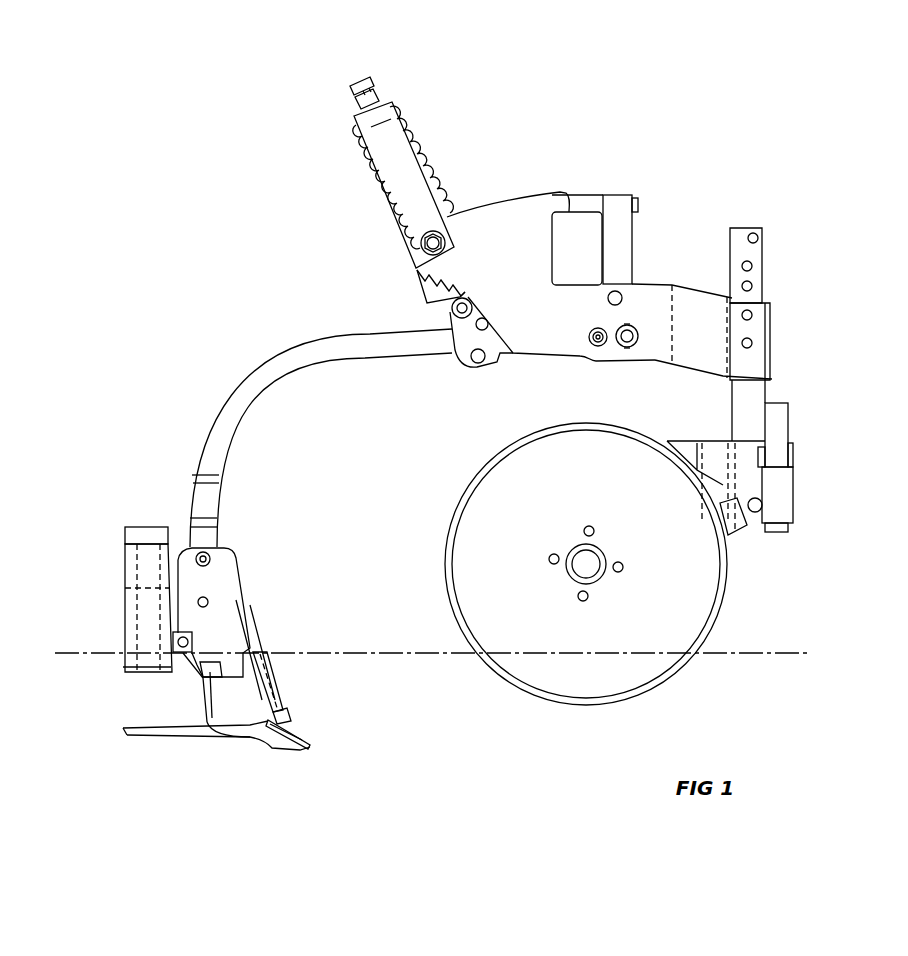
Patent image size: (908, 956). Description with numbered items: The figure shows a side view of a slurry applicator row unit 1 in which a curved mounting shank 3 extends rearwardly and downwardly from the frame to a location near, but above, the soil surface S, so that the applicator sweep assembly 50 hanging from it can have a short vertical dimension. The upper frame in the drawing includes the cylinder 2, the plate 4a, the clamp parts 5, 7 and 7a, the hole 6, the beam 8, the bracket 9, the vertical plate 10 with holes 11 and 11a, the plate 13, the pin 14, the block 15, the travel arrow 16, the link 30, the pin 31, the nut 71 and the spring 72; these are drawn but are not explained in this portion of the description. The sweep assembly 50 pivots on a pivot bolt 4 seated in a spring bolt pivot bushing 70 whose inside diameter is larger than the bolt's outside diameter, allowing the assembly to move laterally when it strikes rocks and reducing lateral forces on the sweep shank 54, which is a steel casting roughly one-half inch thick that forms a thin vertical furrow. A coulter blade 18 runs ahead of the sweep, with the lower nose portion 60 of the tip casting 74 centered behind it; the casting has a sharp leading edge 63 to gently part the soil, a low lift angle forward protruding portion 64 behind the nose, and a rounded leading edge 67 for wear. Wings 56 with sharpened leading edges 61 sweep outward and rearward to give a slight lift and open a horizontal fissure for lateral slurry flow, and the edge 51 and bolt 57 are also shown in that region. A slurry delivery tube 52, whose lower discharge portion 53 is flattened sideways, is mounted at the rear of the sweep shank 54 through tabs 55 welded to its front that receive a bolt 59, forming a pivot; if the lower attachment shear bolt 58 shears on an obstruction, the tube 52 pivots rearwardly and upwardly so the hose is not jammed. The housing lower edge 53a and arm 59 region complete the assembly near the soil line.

The row unit 1 is at (444, 158).
The pressure cylinder 2 is at (378, 178).
The mounting shank 3 is at (250, 377).
The pivot bolt 4 is at (451, 312).
The frame plate 4a is at (503, 245).
The clamp 5 is at (618, 252).
The hole 6 is at (621, 294).
The clamp bolt 7 is at (635, 200).
The clamp block 7a is at (577, 248).
The frame beam 8 is at (700, 298).
The mounting bracket 9 is at (771, 333).
The vertical plate 10 is at (758, 233).
The adjustment holes 11 is at (763, 262).
The adjustment hole 11a is at (760, 307).
The mounting plate 13 is at (783, 420).
The pivot pin 14 is at (750, 527).
The block 15 is at (783, 495).
The direction of travel arrow 16 is at (745, 611).
The coulter blade 18 is at (453, 510).
The link bracket 30 is at (456, 348).
The pivot pin 31 is at (622, 342).
The applicator sweep assembly 50 is at (262, 630).
The blade edge 51 is at (263, 738).
The slurry delivery tube 52 is at (118, 556).
The lower discharge portion 53 is at (125, 652).
The housing bottom 53a is at (147, 673).
The sweep shank 54 is at (210, 565).
The tabs 55 is at (178, 640).
The wings 56 is at (178, 737).
The pivot bolt 57 is at (200, 553).
The lower attachment shear bolt 58 is at (209, 602).
The bolt 59 is at (183, 683).
The lower nose portion 60 is at (310, 747).
The sharpened leading edges 61 is at (208, 737).
The leading edge 63 is at (276, 690).
The forward protruding portion 64 is at (292, 729).
The leading edge 67 is at (290, 720).
The spring bolt pivot bushing 70 is at (451, 307).
The adjusting nut 71 is at (370, 80).
The spring 72 is at (365, 118).
The tip casting 74 is at (275, 657).
The soil surface S is at (768, 655).